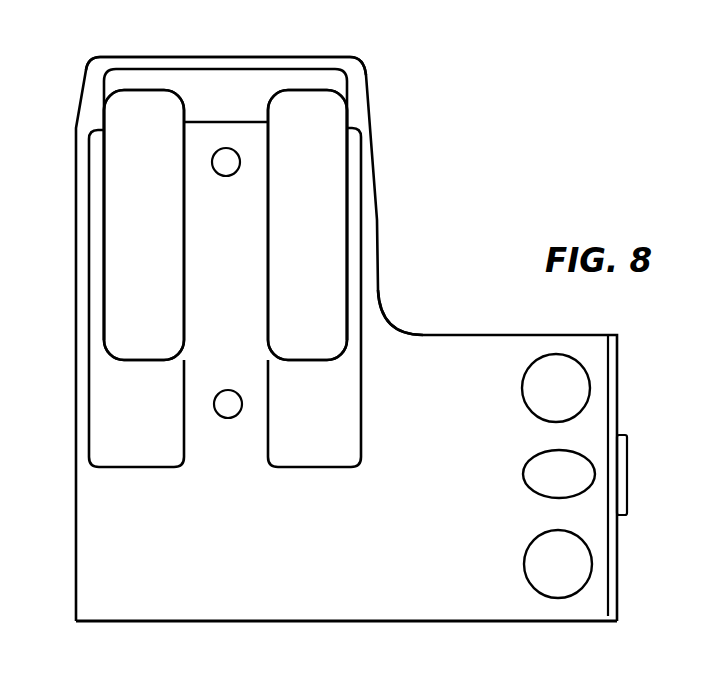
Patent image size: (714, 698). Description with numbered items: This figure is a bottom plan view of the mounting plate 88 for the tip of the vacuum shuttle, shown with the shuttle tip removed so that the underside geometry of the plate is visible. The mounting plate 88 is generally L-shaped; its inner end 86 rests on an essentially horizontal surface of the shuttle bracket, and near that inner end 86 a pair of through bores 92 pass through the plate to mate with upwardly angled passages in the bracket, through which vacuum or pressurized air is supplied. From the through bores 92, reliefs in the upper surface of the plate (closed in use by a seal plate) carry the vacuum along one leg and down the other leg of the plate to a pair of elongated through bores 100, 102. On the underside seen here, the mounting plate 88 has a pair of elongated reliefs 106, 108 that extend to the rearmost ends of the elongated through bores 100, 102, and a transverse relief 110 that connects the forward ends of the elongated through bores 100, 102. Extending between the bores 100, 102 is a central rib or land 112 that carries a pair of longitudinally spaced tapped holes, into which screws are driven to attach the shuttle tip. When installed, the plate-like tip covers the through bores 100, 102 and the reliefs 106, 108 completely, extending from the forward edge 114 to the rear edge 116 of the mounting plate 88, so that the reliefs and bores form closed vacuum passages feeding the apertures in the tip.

The inner end 86 is at (617, 520).
The mounting plate 88 is at (583, 622).
The through bores 92 is at (577, 382).
The elongated through bore 100 is at (122, 236).
The elongated through bore 102 is at (333, 242).
The elongated relief 106 is at (112, 400).
The elongated relief 108 is at (338, 383).
The transverse relief 110 is at (240, 83).
The central rib 112 is at (258, 205).
The forward edge 114 is at (162, 53).
The rear edge 116 is at (252, 622).